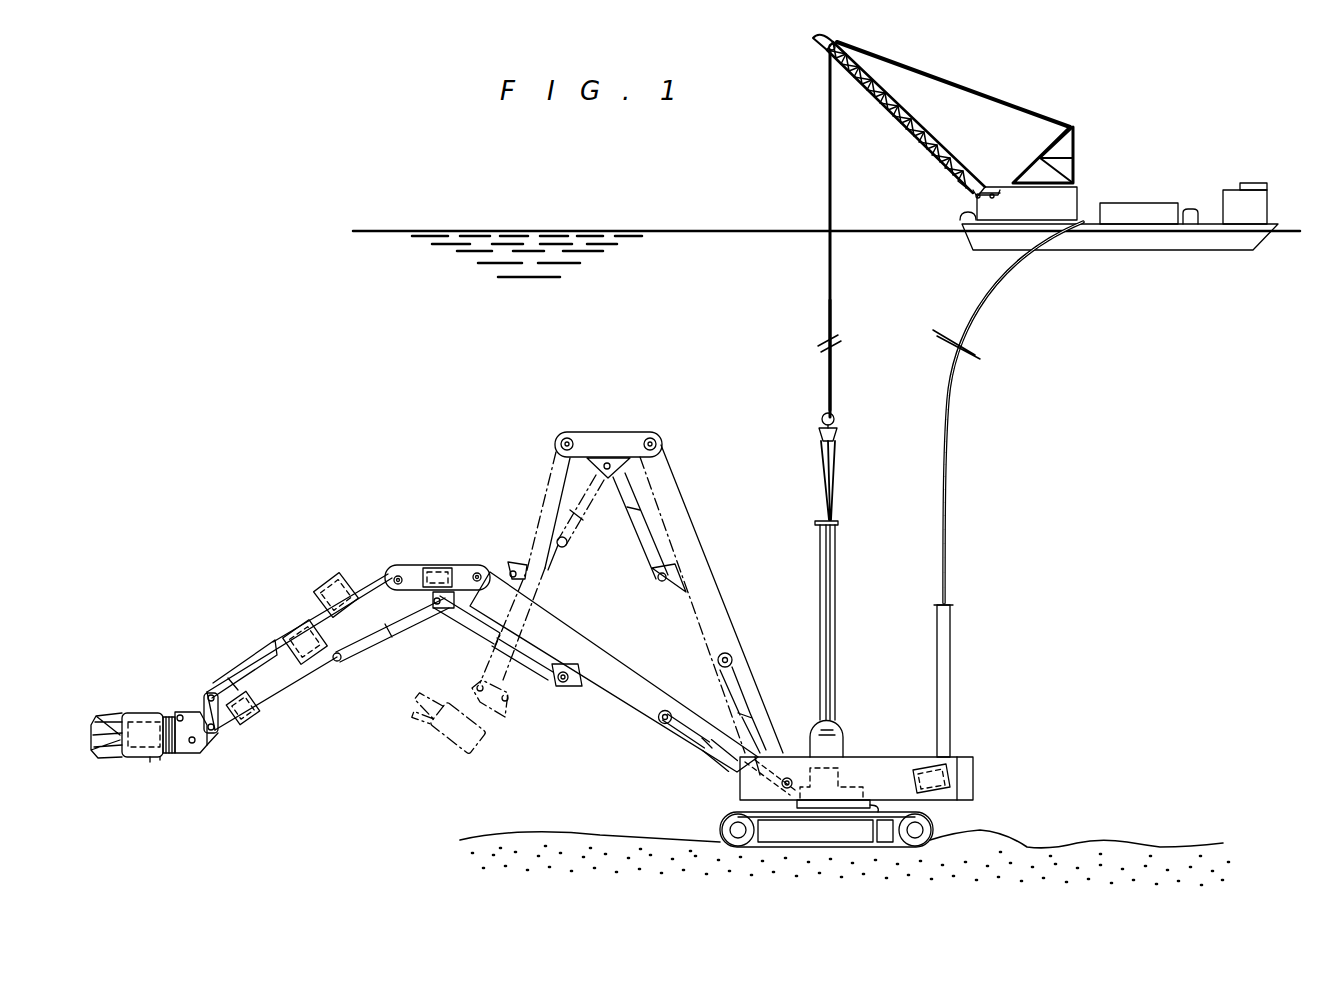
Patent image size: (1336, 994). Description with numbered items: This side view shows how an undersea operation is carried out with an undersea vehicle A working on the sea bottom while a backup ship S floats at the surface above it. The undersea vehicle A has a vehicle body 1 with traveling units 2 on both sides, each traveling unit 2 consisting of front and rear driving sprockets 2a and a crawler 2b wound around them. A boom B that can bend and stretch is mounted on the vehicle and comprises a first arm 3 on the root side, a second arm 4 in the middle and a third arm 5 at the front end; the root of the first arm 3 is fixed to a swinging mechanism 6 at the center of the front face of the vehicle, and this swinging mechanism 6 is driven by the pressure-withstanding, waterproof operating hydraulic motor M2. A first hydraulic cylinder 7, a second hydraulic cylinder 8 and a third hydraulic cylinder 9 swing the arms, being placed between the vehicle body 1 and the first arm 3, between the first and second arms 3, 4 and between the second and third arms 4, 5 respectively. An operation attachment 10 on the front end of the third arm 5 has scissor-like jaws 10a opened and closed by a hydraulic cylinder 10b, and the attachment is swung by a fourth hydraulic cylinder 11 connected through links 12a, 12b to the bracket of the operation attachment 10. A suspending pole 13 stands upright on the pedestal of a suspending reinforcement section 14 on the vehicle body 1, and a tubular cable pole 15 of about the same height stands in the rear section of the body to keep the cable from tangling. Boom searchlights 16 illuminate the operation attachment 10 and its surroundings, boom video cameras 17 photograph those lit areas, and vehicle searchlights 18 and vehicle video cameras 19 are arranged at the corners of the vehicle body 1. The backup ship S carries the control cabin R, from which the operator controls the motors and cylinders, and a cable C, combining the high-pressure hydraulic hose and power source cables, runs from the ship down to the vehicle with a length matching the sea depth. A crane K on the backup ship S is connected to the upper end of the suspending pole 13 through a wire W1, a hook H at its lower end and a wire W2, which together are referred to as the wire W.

The crane K is at (947, 143).
The control cabin R is at (1117, 203).
The backup ship S is at (1113, 250).
The wire W is at (823, 368).
The wire W1 is at (832, 312).
The wire W2 is at (832, 478).
The hook H is at (835, 433).
The cable C is at (954, 469).
The undersea vehicle A is at (972, 748).
The boom B is at (690, 482).
The vehicle body 1 is at (797, 757).
The traveling unit 2 is at (935, 830).
The driving sprocket 2a is at (720, 830).
The crawler 2b is at (730, 815).
The first arm 3 is at (610, 692).
The second arm 4 is at (460, 565).
The third arm 5 is at (293, 680).
The swinging mechanism 6 is at (878, 812).
The first hydraulic cylinder 7 is at (737, 763).
The second hydraulic cylinder 8 is at (537, 670).
The third hydraulic cylinder 9 is at (400, 640).
The operation attachment 10 is at (128, 712).
The scissor-like jaws 10a is at (102, 715).
The hydraulic cylinder 10b is at (160, 757).
The fourth hydraulic cylinder 11 is at (245, 667).
The link 12a is at (220, 727).
The link 12b is at (198, 707).
The suspending pole 13 is at (835, 580).
The suspending reinforcement section 14 is at (843, 730).
The tubular cable pole 15 is at (950, 688).
The boom searchlight 16 is at (335, 573).
The boom video camera 17 is at (348, 572).
The vehicle searchlight 18 is at (973, 788).
The vehicle video camera 19 is at (973, 760).
The operating hydraulic motor M2 is at (838, 777).